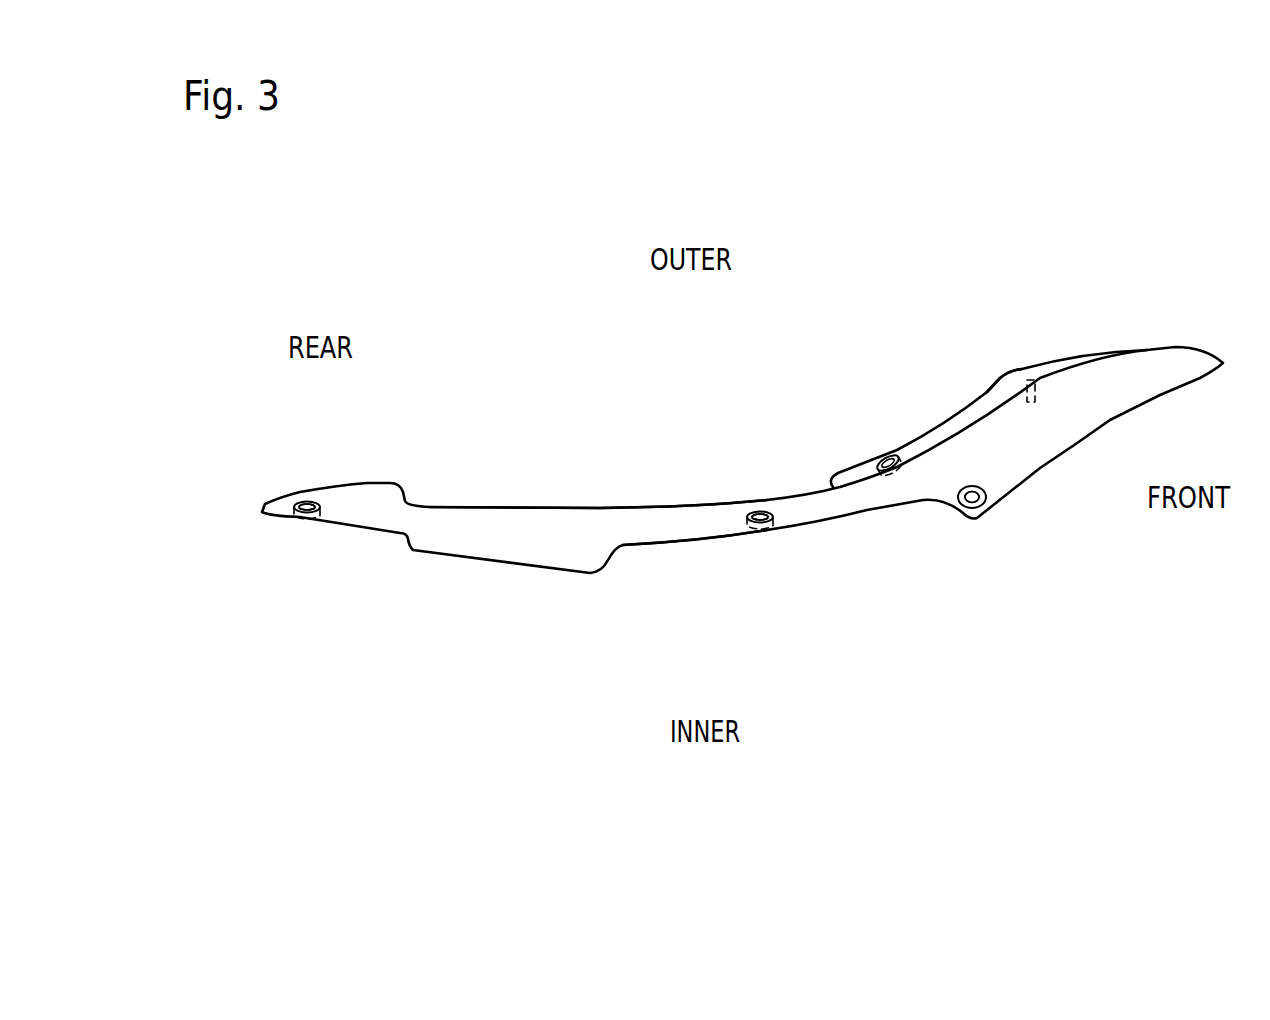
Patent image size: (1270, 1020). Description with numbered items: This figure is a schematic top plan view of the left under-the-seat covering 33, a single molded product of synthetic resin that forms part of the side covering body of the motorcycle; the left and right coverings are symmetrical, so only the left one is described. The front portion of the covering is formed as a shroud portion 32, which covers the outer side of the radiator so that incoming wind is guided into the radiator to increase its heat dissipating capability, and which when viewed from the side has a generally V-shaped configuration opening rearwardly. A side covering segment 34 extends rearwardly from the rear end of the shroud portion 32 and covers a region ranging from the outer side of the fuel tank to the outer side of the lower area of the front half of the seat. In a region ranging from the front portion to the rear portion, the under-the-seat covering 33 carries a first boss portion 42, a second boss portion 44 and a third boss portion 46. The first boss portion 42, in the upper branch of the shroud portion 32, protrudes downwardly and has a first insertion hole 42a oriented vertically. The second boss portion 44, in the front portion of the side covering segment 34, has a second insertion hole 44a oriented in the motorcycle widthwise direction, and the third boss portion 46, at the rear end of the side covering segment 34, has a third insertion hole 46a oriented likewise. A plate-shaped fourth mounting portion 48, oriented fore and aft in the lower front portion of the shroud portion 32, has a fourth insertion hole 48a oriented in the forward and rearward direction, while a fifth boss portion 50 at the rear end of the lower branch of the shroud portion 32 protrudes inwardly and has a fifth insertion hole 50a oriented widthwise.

The shroud portion 32 is at (1070, 430).
The under-the-seat covering 33 is at (600, 509).
The side covering segment 34 is at (647, 530).
The first boss portion 42 is at (987, 492).
The first insertion hole 42a is at (972, 504).
The second boss portion 44 is at (777, 521).
The second insertion hole 44a is at (760, 511).
The third boss portion 46 is at (330, 518).
The third insertion hole 46a is at (305, 523).
The fourth mounting portion 48 is at (1040, 388).
The fourth insertion hole 48a is at (1023, 390).
The fifth boss portion 50 is at (862, 463).
The fifth insertion hole 50a is at (895, 458).